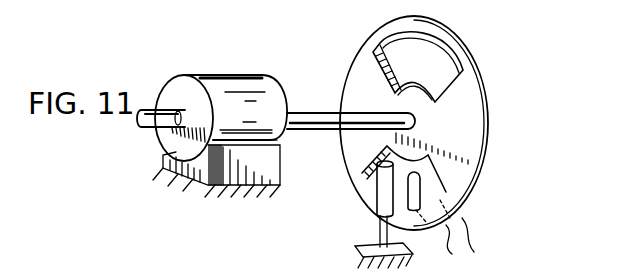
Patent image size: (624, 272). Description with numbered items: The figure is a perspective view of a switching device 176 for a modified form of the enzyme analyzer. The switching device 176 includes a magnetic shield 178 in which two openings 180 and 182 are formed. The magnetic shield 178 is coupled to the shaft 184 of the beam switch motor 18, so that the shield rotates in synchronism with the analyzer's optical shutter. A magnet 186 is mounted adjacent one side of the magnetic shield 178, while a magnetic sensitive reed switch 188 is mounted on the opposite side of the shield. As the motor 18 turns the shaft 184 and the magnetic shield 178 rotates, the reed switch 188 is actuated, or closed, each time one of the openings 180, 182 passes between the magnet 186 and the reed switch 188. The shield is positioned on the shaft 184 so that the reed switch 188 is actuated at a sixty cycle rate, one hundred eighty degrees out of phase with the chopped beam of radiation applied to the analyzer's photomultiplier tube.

The beam switch motor 18 is at (247, 75).
The switching device 176 is at (532, 53).
The magnetic shield 178 is at (476, 113).
The opening 180 is at (390, 52).
The opening 182 is at (372, 176).
The shaft 184 is at (327, 112).
The magnet 186 is at (384, 194).
The magnetic sensitive reed switch 188 is at (421, 191).